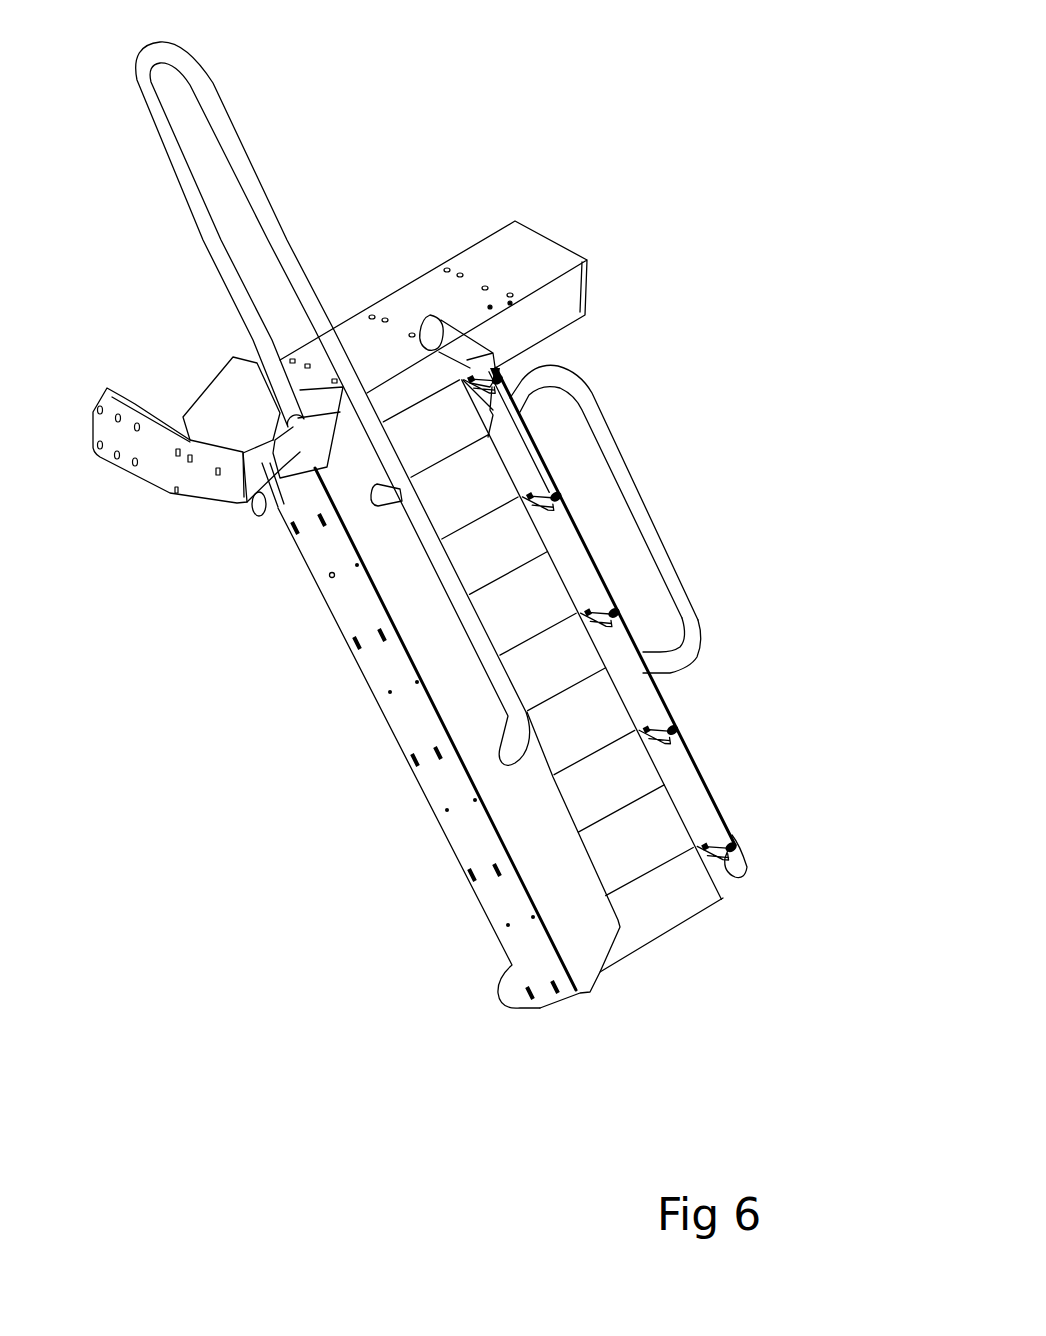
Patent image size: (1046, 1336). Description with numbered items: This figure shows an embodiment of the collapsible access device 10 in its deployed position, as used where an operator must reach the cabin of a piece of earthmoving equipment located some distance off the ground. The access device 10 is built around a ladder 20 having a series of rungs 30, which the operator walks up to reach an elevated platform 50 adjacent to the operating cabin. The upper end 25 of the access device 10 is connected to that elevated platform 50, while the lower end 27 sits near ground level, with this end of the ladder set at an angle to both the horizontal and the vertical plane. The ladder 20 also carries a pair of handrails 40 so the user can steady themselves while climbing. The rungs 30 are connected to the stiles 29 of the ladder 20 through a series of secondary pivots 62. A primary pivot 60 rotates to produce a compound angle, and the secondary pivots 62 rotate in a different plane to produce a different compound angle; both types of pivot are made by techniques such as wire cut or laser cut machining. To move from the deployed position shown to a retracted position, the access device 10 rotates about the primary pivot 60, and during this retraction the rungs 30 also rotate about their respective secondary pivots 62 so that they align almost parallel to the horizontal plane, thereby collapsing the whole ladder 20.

The access device 10 is at (537, 157).
The ladder 20 is at (722, 798).
The upper end 25 is at (406, 358).
The lower end 27 is at (685, 927).
The stiles 29 is at (640, 697).
The rungs 30 is at (592, 792).
The handrails 40 is at (262, 199).
The elevated platform 50 is at (303, 357).
The primary pivot 60 is at (247, 520).
The secondary pivots 62 is at (642, 533).